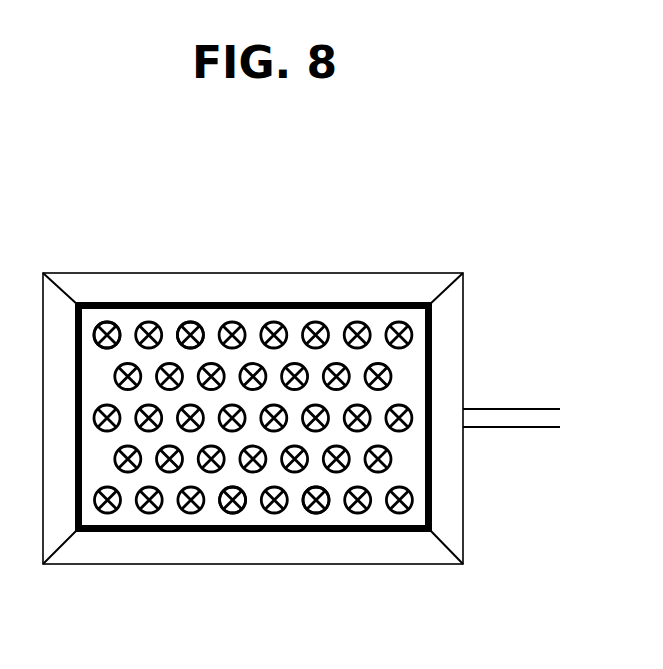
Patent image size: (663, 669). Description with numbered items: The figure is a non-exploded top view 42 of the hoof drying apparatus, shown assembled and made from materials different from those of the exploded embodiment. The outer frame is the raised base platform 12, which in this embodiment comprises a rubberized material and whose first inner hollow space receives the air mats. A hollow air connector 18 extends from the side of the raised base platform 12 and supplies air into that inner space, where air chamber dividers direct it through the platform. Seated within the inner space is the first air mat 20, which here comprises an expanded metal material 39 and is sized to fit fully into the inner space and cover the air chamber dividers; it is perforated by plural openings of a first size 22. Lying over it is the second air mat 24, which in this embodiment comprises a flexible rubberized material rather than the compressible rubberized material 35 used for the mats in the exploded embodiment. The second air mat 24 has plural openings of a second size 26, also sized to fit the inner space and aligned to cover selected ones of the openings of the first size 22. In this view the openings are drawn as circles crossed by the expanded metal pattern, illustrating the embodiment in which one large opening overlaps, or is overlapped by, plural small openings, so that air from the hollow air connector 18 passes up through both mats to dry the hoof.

The non-exploded top view 42 is at (556, 132).
The raised base platform 12 is at (453, 517).
The compressible rubberized material 35 is at (120, 532).
The hollow air connector 18 is at (497, 408).
The second air mat 24 is at (295, 320).
The expanded metal material 39 is at (100, 321).
The plural openings of a second size 26 is at (190, 321).
The plural openings of a first size 22 is at (235, 508).
The first air mat 20 is at (314, 508).